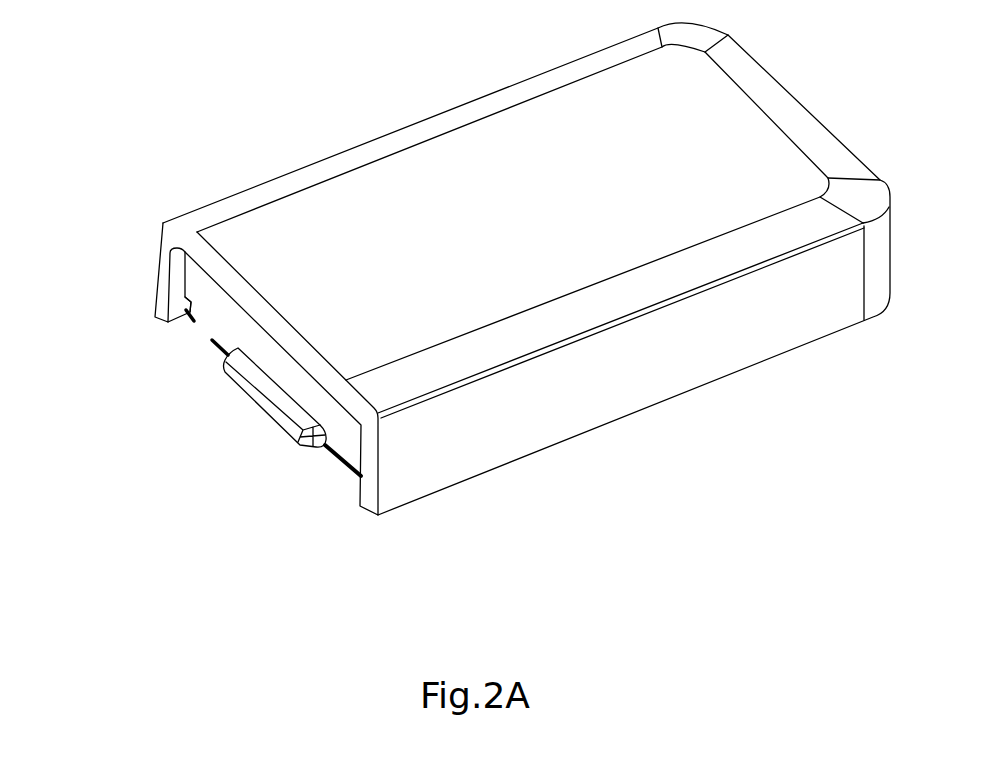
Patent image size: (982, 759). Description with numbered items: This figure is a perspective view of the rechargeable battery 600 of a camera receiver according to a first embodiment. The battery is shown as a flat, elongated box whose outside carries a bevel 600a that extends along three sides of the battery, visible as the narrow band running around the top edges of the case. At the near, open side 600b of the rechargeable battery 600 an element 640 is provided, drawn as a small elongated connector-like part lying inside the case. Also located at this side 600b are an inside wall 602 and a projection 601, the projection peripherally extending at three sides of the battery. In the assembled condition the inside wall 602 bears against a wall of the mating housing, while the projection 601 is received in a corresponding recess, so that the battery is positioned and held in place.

The rechargeable battery 600 is at (526, 269).
The bevel 600a is at (621, 320).
The side of the rechargeable battery 600b is at (163, 223).
The projection 601 is at (175, 318).
The inside wall 602 is at (214, 332).
The element 640 is at (272, 410).